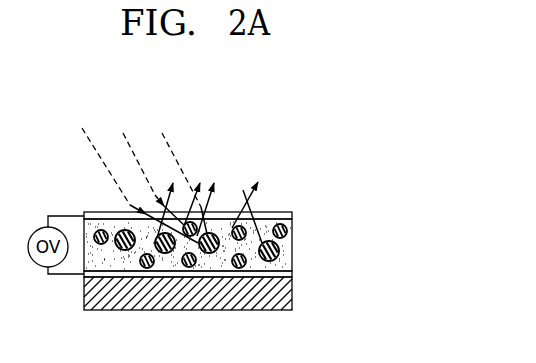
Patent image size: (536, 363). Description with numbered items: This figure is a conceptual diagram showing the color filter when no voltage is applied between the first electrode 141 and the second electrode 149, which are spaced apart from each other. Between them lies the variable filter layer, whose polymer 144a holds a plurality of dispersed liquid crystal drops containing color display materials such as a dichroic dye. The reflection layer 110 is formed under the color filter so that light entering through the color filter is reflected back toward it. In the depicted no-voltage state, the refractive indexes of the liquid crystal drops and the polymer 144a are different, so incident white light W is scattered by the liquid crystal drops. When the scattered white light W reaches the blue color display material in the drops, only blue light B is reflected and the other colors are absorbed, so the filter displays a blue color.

The second electrode 149 is at (292, 213).
The polymer 144a is at (292, 234).
The first electrode 141 is at (292, 277).
The reflection layer 110 is at (292, 300).
The incident white light W is at (144, 175).
The blue light B is at (209, 200).